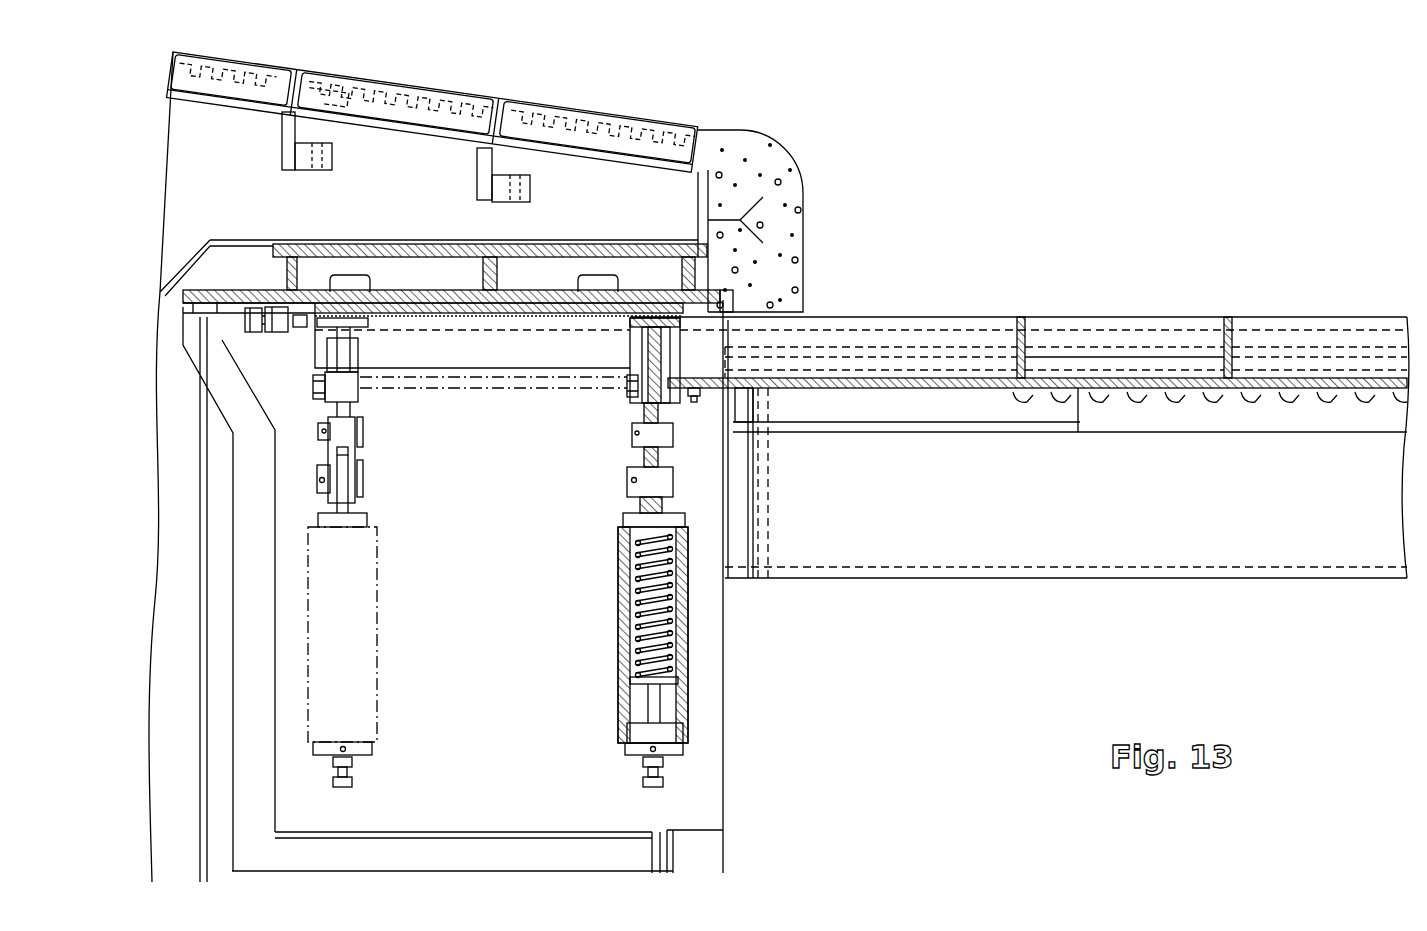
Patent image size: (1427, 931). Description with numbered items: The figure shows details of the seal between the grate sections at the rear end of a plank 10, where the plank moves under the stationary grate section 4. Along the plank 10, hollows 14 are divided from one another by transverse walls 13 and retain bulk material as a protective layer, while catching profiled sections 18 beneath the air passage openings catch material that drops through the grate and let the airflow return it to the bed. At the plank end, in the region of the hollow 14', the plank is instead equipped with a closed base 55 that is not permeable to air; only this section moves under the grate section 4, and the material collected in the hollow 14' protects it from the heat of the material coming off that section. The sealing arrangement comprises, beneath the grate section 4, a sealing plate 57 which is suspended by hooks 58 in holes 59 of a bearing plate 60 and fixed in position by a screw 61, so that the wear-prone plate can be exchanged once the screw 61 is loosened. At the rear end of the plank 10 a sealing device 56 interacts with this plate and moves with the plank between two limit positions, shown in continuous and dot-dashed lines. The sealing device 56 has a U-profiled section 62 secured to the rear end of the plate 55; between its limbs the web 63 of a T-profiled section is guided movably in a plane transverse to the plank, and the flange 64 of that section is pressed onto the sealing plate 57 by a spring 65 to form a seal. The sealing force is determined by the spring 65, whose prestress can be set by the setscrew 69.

The grate section 4 is at (472, 89).
The plank 10 is at (1155, 386).
The transverse wall 13 is at (1023, 340).
The hollow 14 is at (1216, 310).
The hollow 14' is at (871, 313).
The catching profiled section 18 is at (1092, 402).
The closed base 55 is at (902, 390).
The sealing device 56 is at (621, 397).
The sealing plate 57 is at (533, 306).
The hook 58 is at (352, 280).
The hole 59 is at (328, 290).
The bearing plate 60 is at (418, 292).
The screw 61 is at (258, 300).
The U-profiled section 62 is at (640, 405).
The web 63 is at (645, 347).
The flange 64 is at (653, 315).
The spring 65 is at (636, 590).
The setscrew 69 is at (645, 770).